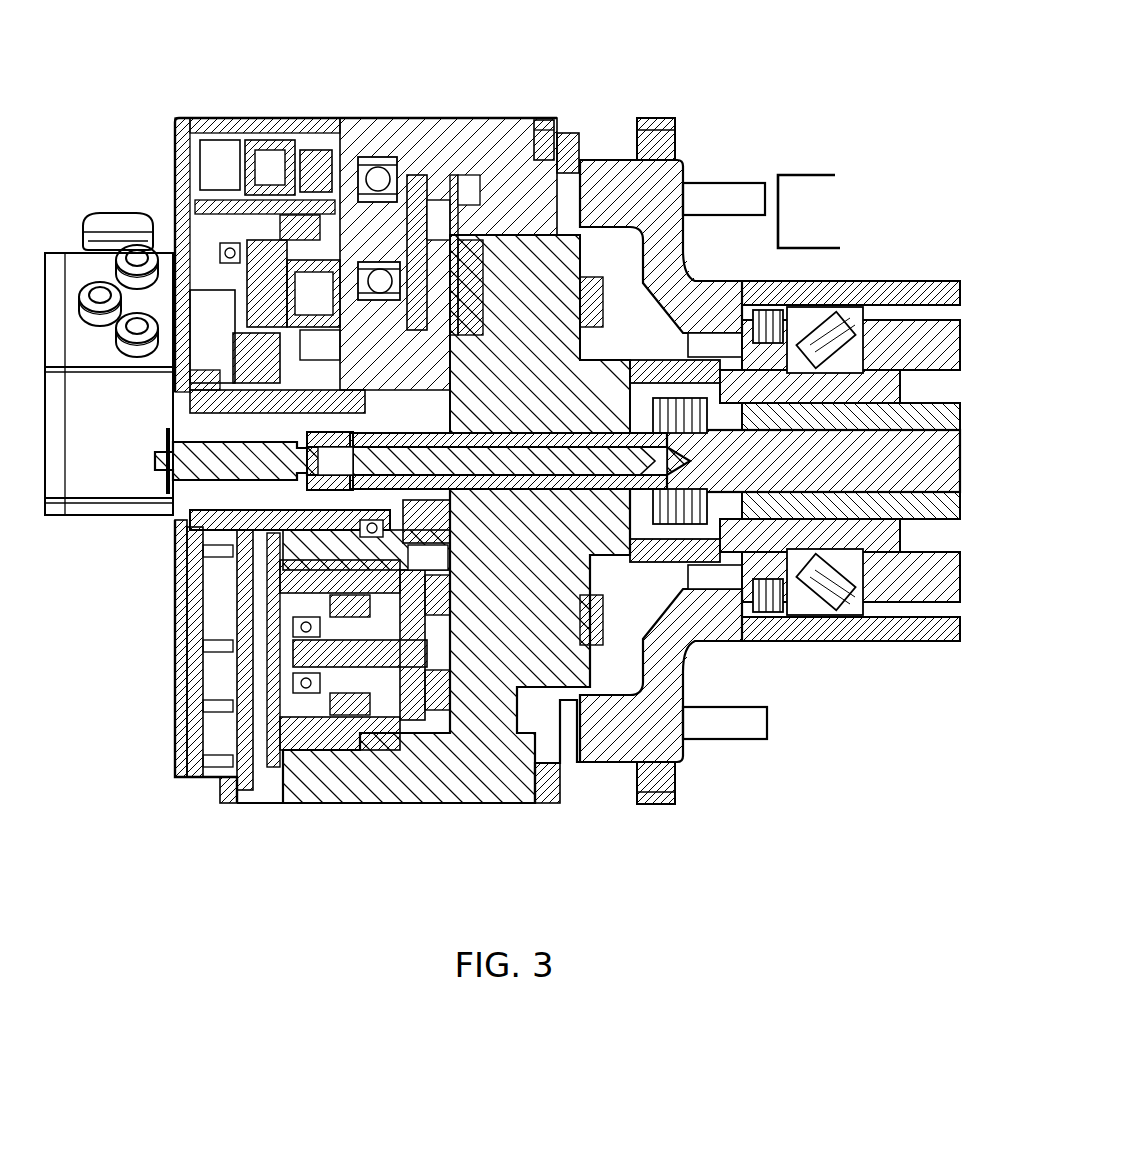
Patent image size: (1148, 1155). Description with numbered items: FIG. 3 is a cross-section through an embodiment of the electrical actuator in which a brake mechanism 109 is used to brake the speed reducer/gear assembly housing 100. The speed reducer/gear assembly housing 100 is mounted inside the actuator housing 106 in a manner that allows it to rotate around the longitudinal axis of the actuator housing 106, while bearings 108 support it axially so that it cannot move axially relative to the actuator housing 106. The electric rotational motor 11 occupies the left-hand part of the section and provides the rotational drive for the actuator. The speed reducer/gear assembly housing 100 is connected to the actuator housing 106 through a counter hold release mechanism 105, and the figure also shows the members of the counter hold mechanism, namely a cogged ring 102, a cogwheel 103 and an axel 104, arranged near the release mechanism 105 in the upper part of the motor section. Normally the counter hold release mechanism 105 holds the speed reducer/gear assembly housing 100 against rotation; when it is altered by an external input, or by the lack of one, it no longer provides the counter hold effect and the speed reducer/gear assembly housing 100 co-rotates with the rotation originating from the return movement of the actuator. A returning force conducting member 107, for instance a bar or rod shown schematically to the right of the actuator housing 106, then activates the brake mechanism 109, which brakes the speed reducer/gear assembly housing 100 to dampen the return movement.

The counter hold release mechanism 105 is at (272, 150).
The cogged ring 102 is at (362, 166).
The axel 104 is at (425, 200).
The cogwheel 103 is at (434, 187).
The brake mechanism 109 is at (513, 158).
The speed reducer/gear assembly housing 100 is at (548, 270).
The actuator housing 106 is at (662, 183).
The returning force conducting member 107 is at (830, 218).
The electric rotational motor 11 is at (228, 795).
The bearings 108 is at (436, 545).